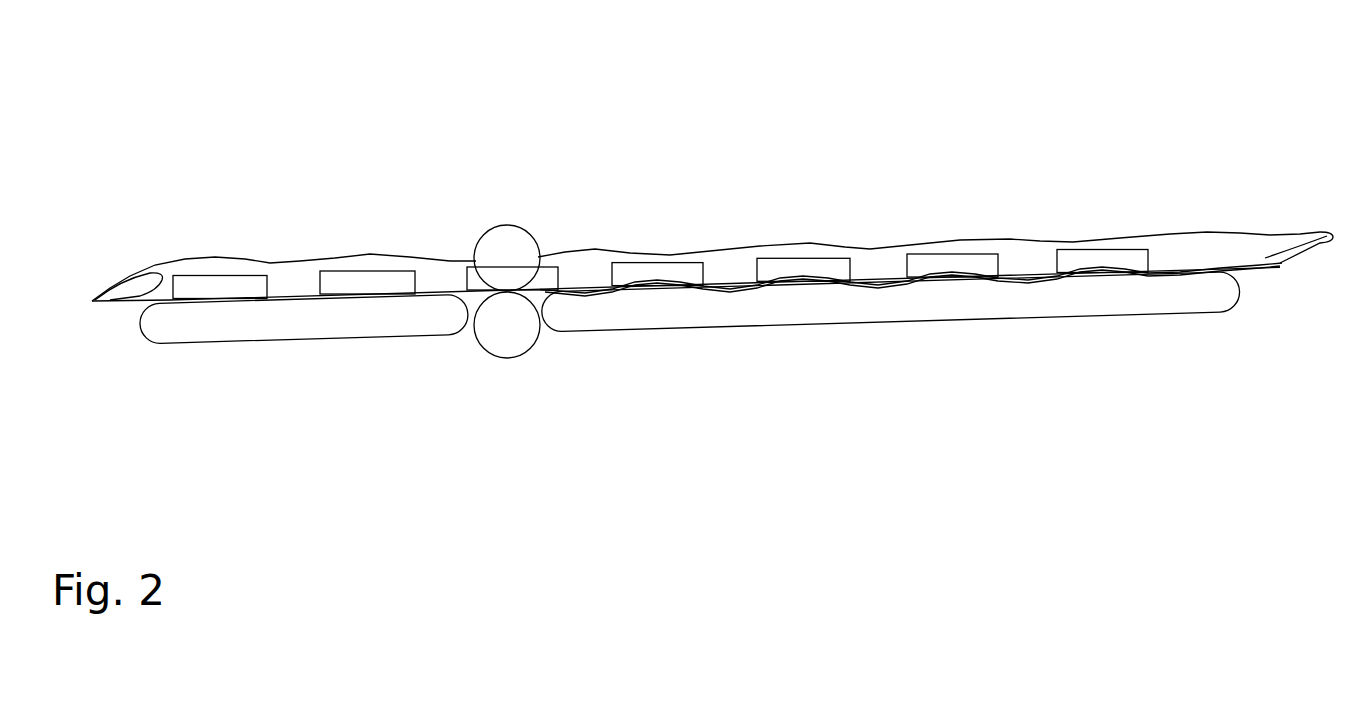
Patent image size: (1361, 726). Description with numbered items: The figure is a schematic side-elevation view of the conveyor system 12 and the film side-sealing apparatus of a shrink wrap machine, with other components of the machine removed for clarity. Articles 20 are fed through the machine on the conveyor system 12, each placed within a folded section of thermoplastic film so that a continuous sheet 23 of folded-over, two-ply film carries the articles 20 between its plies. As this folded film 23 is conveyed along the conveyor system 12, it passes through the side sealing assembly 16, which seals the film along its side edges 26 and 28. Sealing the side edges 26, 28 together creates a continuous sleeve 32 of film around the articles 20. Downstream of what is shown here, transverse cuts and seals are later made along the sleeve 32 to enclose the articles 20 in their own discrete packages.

The conveyor system 12 is at (932, 310).
The side sealing assembly 16 is at (503, 206).
The articles 20 is at (247, 283).
The continuous sheet of folded-over two-ply film 23 is at (740, 258).
The side edge 26 is at (1275, 247).
The side edge 28 is at (1285, 263).
The continuous sleeve 32 is at (167, 263).